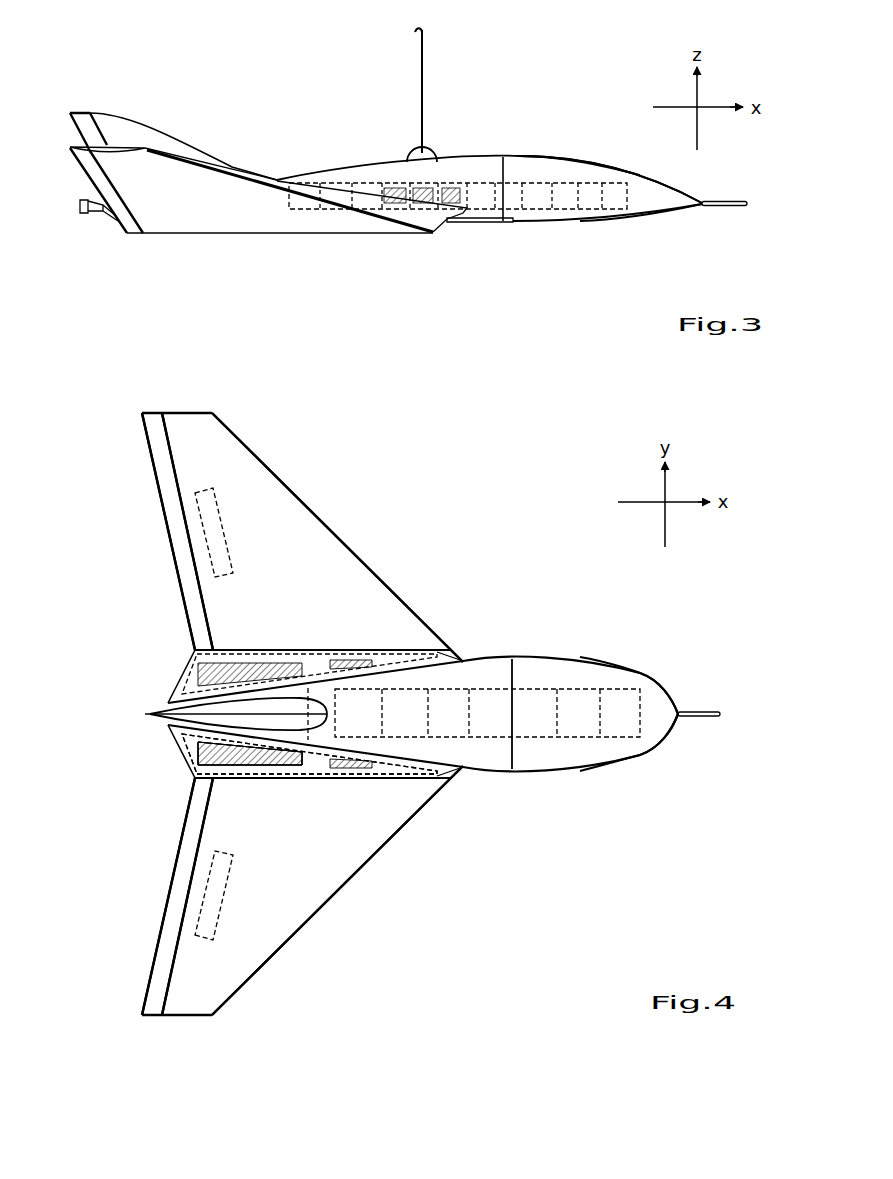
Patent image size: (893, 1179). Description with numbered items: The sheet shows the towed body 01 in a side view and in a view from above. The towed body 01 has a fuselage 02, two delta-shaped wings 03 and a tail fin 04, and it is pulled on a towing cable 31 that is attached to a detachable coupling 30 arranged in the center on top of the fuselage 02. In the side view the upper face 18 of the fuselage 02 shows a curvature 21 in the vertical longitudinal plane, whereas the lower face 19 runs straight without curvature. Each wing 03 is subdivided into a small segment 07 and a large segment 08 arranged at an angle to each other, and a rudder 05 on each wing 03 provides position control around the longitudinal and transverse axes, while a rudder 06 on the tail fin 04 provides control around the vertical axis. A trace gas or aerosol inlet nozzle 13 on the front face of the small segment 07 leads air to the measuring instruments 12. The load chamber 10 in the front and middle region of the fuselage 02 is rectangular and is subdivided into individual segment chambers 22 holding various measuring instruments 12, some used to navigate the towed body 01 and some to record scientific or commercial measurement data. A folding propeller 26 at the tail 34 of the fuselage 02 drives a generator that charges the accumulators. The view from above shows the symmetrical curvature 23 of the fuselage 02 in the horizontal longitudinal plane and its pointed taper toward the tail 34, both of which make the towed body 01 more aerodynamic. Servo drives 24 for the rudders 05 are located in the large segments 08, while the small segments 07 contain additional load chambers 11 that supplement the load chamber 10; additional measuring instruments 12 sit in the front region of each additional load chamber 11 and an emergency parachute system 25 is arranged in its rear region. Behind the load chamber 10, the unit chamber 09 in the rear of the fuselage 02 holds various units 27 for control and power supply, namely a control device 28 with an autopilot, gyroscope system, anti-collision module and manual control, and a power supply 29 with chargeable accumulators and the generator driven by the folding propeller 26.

In FIG. 3, the towed body 01 is at (221, 74).
In FIG. 4, the towed body 01 is at (517, 548).
In FIG. 3, the fuselage 02 is at (650, 203).
In FIG. 4, the fuselage 02 is at (568, 677).
In FIG. 3, the wing 03 is at (170, 212).
In FIG. 4, the wing 03 is at (288, 468).
In FIG. 3, the tail fin 04 is at (123, 135).
In FIG. 4, the tail fin 04 is at (283, 708).
In FIG. 3, the rudder 05 is at (93, 177).
In FIG. 4, the rudder 05 is at (162, 452).
In FIG. 3, the rudder 06 is at (90, 128).
In FIG. 4, the rudder 06 is at (147, 716).
In FIG. 3, the small segment 07 is at (432, 219).
In FIG. 4, the small segment 07 is at (448, 655).
In FIG. 3, the large segment 08 is at (223, 212).
In FIG. 4, the large segment 08 is at (305, 535).
In FIG. 4, the unit chamber 09 is at (297, 737).
In FIG. 3, the load chamber 10 is at (537, 190).
In FIG. 4, the load chamber 10 is at (498, 680).
In FIG. 4, the additional load chamber 11 is at (411, 640).
In FIG. 3, the measuring instruments 12 is at (430, 192).
In FIG. 4, the measuring instruments 12 is at (360, 665).
In FIG. 3, the trace gas or aerosol inlet nozzle 13 is at (483, 223).
In FIG. 3, the upper face 18 is at (608, 163).
In FIG. 3, the lower face 19 is at (617, 219).
In FIG. 3, the curvature 21 is at (557, 151).
In FIG. 3, the segment chamber 22 is at (588, 198).
In FIG. 4, the segment chamber 22 is at (593, 723).
In FIG. 4, the symmetrical curvature 23 is at (632, 672).
In FIG. 4, the servo drive 24 is at (208, 523).
In FIG. 4, the emergency parachute system 25 is at (207, 677).
In FIG. 3, the folding propeller 26 is at (85, 214).
In FIG. 4, the units 27 is at (297, 737).
In FIG. 4, the control device 28 is at (297, 737).
In FIG. 4, the power supply 29 is at (297, 737).
In FIG. 3, the detachable coupling 30 is at (432, 153).
In FIG. 3, the towing cable 31 is at (420, 73).
In FIG. 3, the tail 34 is at (62, 218).
In FIG. 4, the tail 34 is at (138, 735).